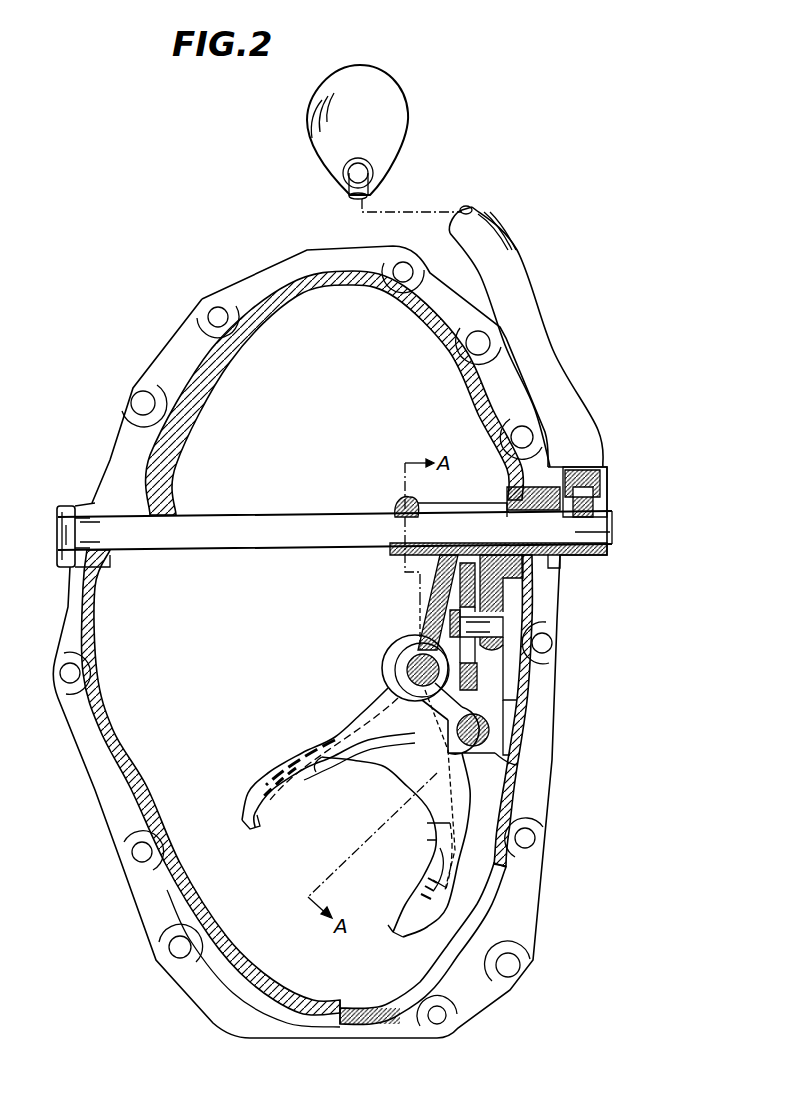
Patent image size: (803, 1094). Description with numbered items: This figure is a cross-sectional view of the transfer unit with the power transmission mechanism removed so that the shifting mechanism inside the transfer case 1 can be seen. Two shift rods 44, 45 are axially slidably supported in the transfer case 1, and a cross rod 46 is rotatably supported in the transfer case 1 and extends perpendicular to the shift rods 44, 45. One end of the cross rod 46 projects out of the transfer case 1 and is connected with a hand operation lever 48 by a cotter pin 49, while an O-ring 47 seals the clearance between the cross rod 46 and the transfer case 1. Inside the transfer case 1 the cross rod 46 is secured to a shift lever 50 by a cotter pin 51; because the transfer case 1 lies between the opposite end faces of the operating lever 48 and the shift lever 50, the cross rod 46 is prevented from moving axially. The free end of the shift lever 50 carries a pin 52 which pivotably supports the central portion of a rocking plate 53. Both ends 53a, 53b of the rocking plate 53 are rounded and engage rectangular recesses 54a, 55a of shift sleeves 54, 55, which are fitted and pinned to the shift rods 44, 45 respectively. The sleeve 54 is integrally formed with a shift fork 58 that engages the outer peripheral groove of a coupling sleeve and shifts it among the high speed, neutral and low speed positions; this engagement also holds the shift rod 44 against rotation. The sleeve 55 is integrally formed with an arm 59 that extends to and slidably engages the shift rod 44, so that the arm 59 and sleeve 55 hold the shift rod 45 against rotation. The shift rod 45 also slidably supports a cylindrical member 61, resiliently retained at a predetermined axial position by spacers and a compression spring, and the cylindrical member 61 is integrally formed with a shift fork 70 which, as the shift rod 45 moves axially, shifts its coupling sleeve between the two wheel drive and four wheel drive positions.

The transfer case 1 is at (257, 293).
The hand operation lever 48 is at (535, 303).
The cross rod 46 is at (305, 515).
The cotter pin 51 is at (395, 500).
The cotter pin 49 is at (600, 500).
The shift lever 50 is at (398, 553).
The O-ring 47 is at (573, 560).
The pin 52 is at (495, 625).
The rocking plate 53 is at (530, 650).
The end of rocking plate 53a is at (525, 675).
The end of rocking plate 53b is at (467, 560).
The shift sleeve 54 is at (518, 720).
The rectangular recess 54a is at (510, 690).
The shift sleeve 55 is at (395, 655).
The rectangular recess 55a is at (460, 578).
The shift rod 45 is at (395, 672).
The cylindrical member 61 is at (385, 688).
The shift rod 44 is at (490, 740).
The arm 59 is at (530, 770).
The shift fork 58 is at (322, 762).
The shift fork 70 is at (250, 800).